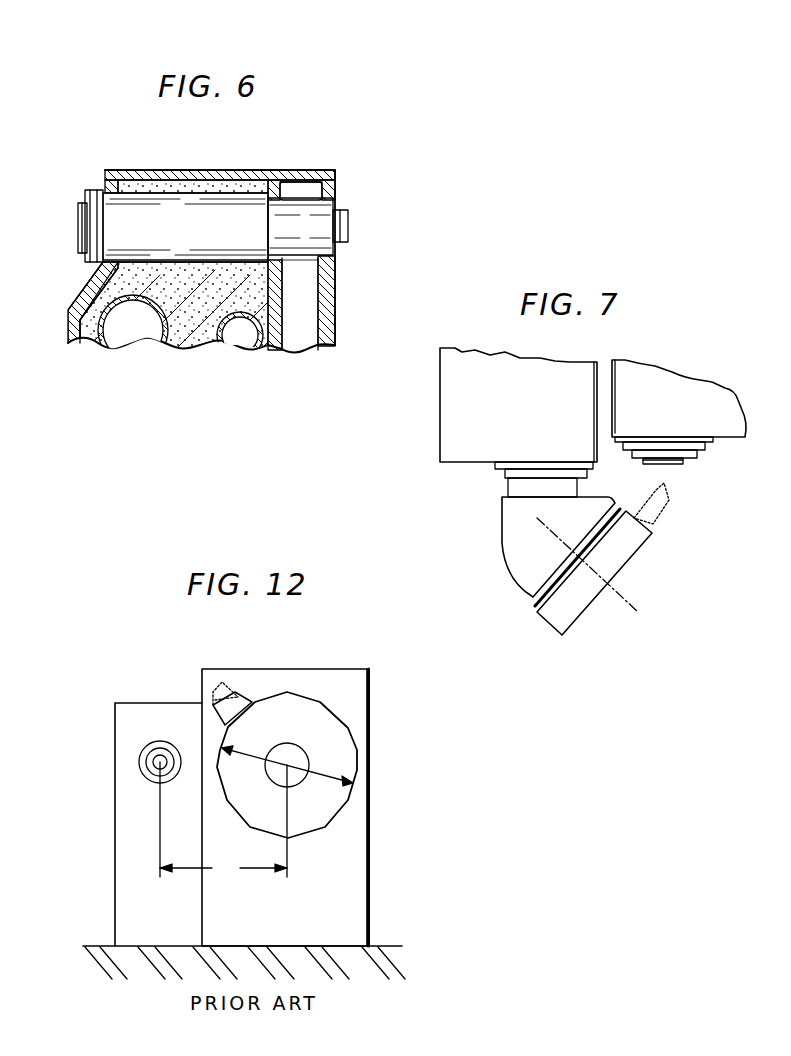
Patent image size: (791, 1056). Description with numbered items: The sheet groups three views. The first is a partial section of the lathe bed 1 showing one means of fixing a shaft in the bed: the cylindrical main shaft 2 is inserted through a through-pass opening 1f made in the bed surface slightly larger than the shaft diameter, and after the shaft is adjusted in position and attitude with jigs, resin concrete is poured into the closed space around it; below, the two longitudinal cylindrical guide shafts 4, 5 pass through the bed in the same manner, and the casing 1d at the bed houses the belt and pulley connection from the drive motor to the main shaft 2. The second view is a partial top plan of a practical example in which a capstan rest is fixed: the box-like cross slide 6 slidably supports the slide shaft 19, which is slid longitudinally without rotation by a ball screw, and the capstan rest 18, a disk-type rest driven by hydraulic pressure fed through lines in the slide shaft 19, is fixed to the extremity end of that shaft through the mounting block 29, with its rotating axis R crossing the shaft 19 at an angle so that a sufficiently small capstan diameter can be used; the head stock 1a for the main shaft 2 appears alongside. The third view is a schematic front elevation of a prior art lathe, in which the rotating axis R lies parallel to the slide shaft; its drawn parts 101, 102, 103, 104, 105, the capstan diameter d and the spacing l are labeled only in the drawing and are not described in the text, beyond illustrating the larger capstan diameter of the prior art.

In FIG. 6, the lathe bed 1 is at (258, 175).
In FIG. 6, the through-pass opening for the main shaft 1f is at (112, 200).
In FIG. 6, the casing 1d is at (307, 308).
In FIG. 7, the head stock 1a is at (686, 416).
In FIG. 6, the main shaft 2 is at (164, 240).
In FIG. 7, the main shaft 2 is at (670, 466).
In FIG. 6, the guide shaft 4 is at (137, 302).
In FIG. 6, the guide shaft 5 is at (243, 320).
In FIG. 7, the cross slide 6 is at (522, 410).
In FIG. 7, the slide shaft 19 is at (520, 485).
In FIG. 7, the mounting block 29 is at (527, 553).
In FIG. 7, the capstan rest 18 is at (555, 612).
In FIG. 7, the capstan rotating axis R is at (633, 608).
In FIG. 12, the chuck body 101 is at (300, 705).
In FIG. 12, the pivot 102 is at (160, 745).
In FIG. 12, the center hole 103 is at (297, 760).
In FIG. 12, the tool 104 is at (228, 682).
In FIG. 12, the tool tip 105 is at (243, 697).
In FIG. 12, the diameter d is at (330, 786).
In FIG. 12, the distance l is at (223, 869).